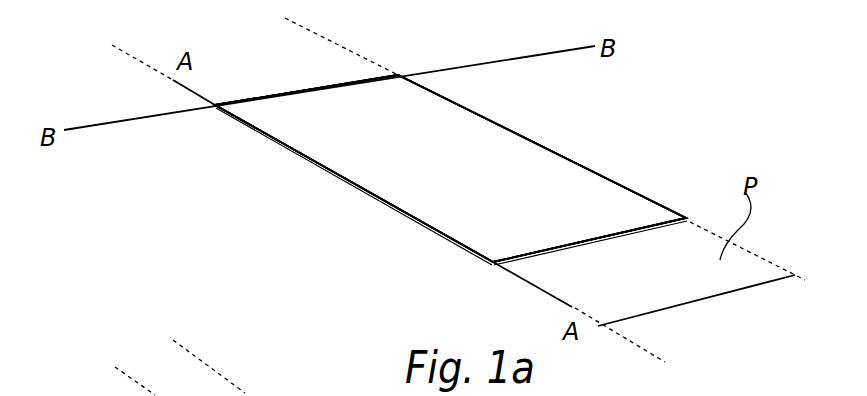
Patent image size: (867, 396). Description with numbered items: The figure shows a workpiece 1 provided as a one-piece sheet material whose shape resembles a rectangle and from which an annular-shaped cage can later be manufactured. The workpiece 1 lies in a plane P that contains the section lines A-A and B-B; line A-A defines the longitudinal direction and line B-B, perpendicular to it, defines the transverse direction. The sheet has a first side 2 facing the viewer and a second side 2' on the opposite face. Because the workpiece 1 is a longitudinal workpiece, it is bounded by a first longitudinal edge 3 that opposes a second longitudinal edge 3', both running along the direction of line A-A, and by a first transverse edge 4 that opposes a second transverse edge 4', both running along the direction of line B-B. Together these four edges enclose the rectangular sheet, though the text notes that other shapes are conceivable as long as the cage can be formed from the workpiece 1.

The workpiece 1 is at (670, 83).
The first side 2 is at (450, 168).
The second side 2' is at (450, 198).
The first longitudinal edge 3 is at (354, 185).
The second longitudinal edge 3' is at (542, 146).
The first transverse edge 4 is at (590, 260).
The second transverse edge 4' is at (306, 215).